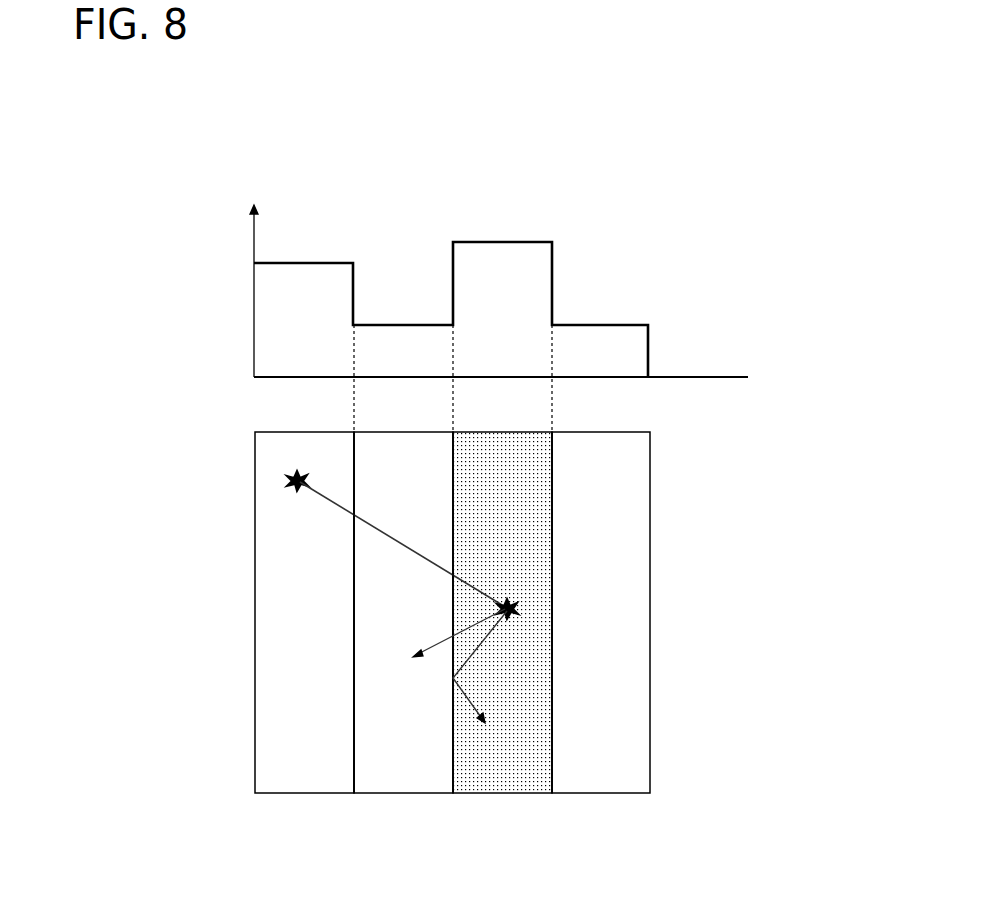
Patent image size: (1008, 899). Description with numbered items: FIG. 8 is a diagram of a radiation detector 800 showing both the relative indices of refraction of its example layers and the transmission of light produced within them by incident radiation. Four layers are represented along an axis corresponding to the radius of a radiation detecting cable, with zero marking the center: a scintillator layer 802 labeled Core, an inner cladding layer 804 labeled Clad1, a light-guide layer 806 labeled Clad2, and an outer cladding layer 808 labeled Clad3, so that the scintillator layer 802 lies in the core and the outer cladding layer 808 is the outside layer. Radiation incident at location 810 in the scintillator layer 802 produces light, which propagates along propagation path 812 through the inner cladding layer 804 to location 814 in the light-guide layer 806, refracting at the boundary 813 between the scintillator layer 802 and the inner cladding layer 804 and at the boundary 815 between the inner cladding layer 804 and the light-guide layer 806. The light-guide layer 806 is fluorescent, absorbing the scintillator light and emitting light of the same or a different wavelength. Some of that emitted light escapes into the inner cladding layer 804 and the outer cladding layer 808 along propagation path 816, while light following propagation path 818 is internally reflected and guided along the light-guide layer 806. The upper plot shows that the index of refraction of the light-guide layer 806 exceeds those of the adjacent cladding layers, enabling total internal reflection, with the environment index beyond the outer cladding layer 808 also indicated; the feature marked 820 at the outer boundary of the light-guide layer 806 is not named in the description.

The radiation detector 800 is at (770, 84).
The scintillator layer 802 is at (258, 797).
The inner cladding layer 804 is at (450, 797).
The light-guide layer 806 is at (549, 797).
The outer cladding layer 808 is at (555, 797).
The location 810 is at (297, 480).
The propagation path 812 is at (423, 567).
The boundary 813 is at (354, 540).
The location 814 is at (512, 608).
The boundary 815 is at (453, 765).
The propagation path 816 is at (455, 638).
The propagation path 818 is at (467, 697).
The second-third cladding interface 820 is at (552, 553).